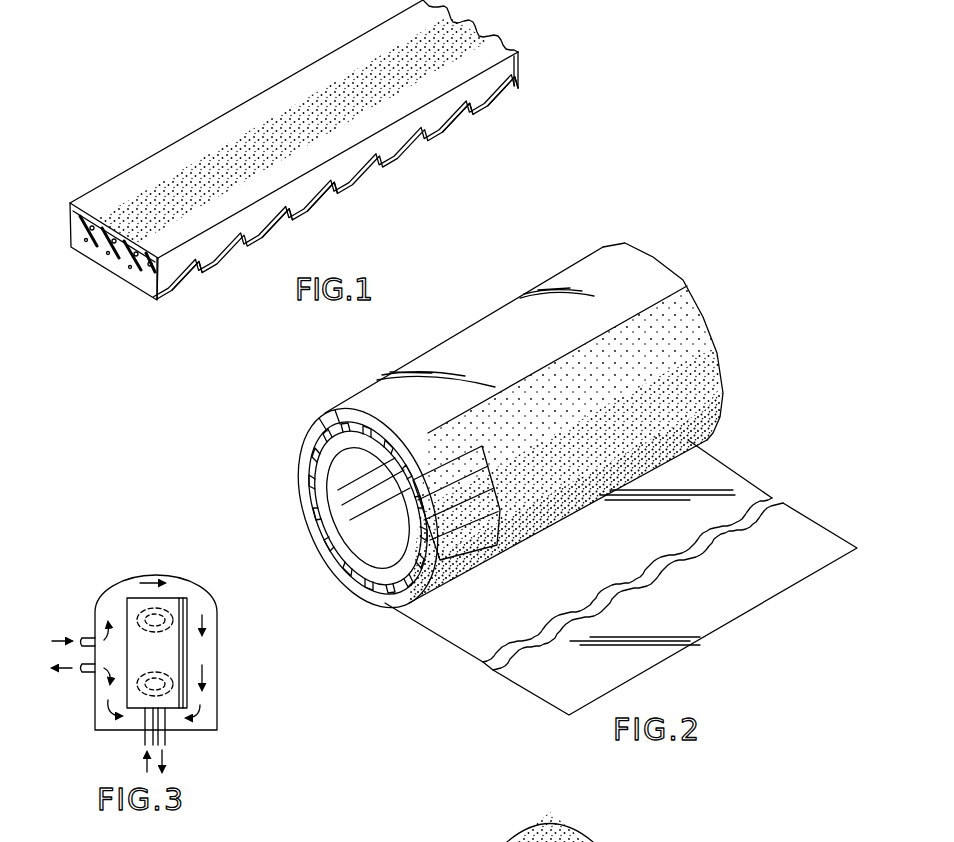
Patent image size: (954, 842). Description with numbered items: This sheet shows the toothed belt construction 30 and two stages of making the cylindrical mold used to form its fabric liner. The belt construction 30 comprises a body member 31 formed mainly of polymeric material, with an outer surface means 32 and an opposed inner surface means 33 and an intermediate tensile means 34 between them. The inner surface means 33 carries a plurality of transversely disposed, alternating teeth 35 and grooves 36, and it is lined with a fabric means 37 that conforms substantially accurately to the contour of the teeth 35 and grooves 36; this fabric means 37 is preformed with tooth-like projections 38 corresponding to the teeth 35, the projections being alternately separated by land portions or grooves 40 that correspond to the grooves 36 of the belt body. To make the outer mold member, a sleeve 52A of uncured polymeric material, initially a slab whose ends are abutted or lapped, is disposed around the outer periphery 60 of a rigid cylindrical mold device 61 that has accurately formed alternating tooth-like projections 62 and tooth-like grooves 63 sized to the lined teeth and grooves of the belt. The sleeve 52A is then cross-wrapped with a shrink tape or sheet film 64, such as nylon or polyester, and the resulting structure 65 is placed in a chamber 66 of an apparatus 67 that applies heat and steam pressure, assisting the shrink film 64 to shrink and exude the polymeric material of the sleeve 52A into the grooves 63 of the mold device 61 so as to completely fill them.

In FIG. 1, the toothed belt construction 30 is at (324, 170).
In FIG. 1, the body member 31 is at (522, 62).
In FIG. 1, the outer surface means 32 is at (309, 78).
In FIG. 1, the inner surface means 33 is at (400, 170).
In FIG. 1, the intermediate tensile means 34 is at (120, 267).
In FIG. 1, the teeth 35 is at (294, 222).
In FIG. 1, the grooves 36 is at (334, 204).
In FIG. 1, the fabric means 37 is at (447, 135).
In FIG. 1, the tooth-like projections 38 is at (497, 112).
In FIG. 1, the land portions or grooves 40 is at (186, 270).
In FIG. 2, the sleeve of uncured polymeric material 52A is at (361, 508).
In FIG. 2, the outer periphery 60 is at (484, 435).
In FIG. 2, the cylindrical mold device 61 is at (314, 506).
In FIG. 2, the tooth-like projections 62 is at (330, 418).
In FIG. 2, the tooth-like grooves 63 is at (338, 554).
In FIG. 2, the shrink tape or sheet film 64 is at (728, 484).
In FIG. 3, the resulting structure 65 is at (188, 652).
In FIG. 3, the chamber 66 is at (117, 612).
In FIG. 3, the apparatus 67 is at (95, 695).